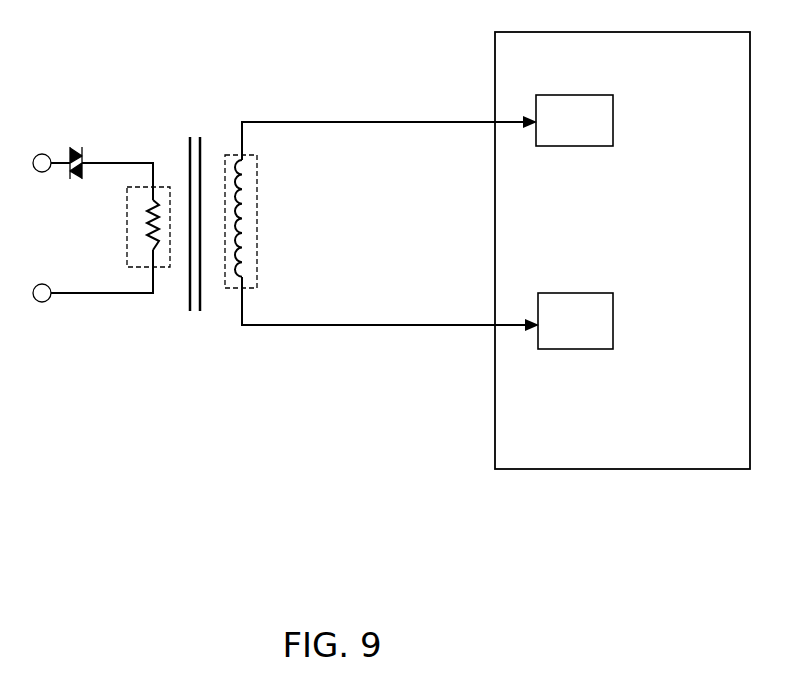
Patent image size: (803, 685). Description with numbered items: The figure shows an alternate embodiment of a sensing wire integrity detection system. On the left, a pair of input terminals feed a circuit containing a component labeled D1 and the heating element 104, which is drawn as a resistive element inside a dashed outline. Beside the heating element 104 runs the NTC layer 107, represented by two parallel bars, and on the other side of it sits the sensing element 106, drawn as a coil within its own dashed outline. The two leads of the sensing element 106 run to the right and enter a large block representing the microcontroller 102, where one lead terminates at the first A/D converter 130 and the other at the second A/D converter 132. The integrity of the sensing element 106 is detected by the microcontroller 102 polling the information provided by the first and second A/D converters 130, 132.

The microcontroller 102 is at (670, 98).
The heating element 104 is at (127, 236).
The sensing element 106 is at (256, 213).
The NTC layer 107 is at (194, 122).
The first A/D converter 130 is at (564, 95).
The second A/D converter 132 is at (562, 349).
The protection diode D1 is at (81, 149).